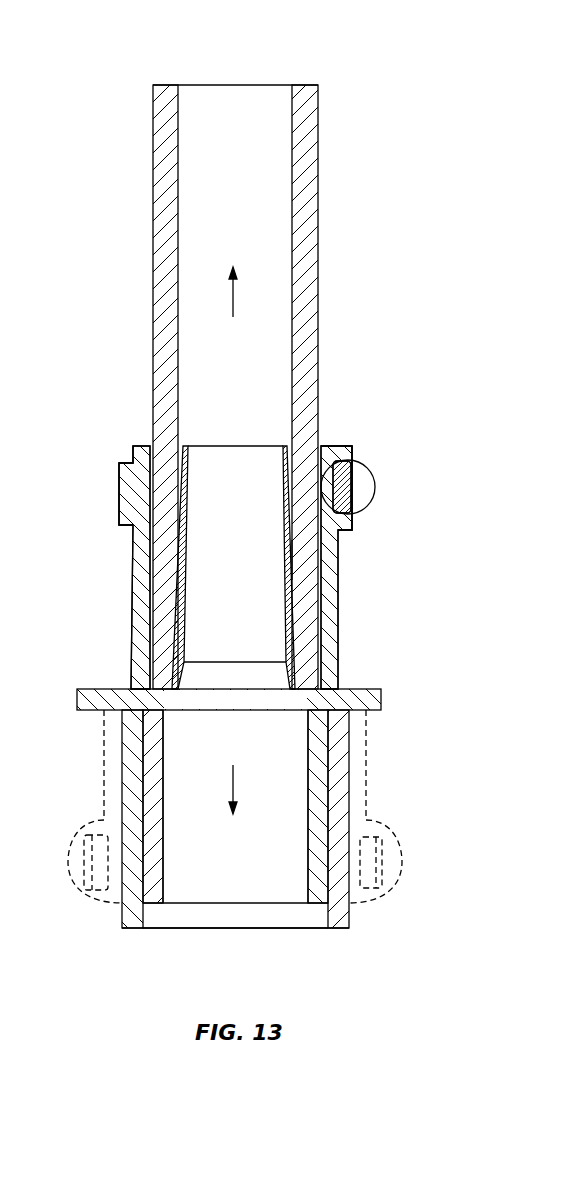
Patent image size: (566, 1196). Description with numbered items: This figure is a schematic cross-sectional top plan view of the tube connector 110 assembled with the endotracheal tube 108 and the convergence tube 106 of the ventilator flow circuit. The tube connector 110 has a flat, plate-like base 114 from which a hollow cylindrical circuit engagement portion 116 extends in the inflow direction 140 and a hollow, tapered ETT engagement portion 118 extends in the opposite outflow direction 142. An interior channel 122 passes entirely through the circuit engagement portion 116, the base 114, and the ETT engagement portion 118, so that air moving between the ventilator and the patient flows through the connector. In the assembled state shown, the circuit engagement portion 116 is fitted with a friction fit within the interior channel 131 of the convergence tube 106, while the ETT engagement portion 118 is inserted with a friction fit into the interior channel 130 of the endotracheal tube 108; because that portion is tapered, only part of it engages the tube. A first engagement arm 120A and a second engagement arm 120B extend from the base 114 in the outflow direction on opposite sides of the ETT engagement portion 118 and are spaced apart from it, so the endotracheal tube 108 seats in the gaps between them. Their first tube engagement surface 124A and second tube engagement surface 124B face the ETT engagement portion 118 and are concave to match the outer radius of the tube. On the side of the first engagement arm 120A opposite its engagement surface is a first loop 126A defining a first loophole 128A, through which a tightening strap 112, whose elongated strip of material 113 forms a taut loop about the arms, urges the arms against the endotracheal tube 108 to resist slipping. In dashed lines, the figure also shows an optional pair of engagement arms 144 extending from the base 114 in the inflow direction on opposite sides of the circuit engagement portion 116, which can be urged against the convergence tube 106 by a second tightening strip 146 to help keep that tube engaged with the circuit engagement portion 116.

The convergence tube 106 is at (349, 797).
The endotracheal tube 108 is at (308, 120).
The tube connector 110 is at (266, 439).
The tightening strap 112 is at (345, 455).
The strip of material 113 is at (123, 472).
The base 114 is at (77, 698).
The circuit engagement portion 116 is at (315, 873).
The ETT engagement portion 118 is at (299, 557).
The first engagement arm 120A is at (347, 620).
The second engagement arm 120B is at (122, 648).
The interior channel 122 is at (190, 886).
The first tube engagement surface 124A is at (299, 474).
The second tube engagement surface 124B is at (152, 457).
The first loop 126A is at (365, 498).
The first loophole 128A is at (362, 473).
The interior channel of the ETT 130 is at (199, 112).
The interior channel of the convergence tube 131 is at (312, 937).
The inflow direction 140 is at (236, 766).
The outflow direction 142 is at (230, 310).
The engagement arms 144 is at (94, 773).
The second tightening strip 146 is at (95, 868).